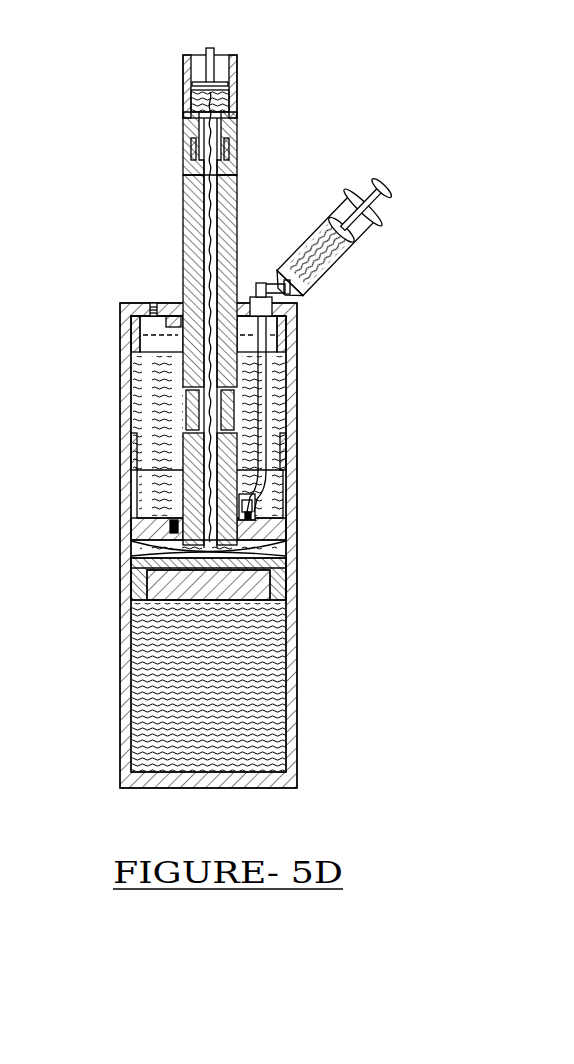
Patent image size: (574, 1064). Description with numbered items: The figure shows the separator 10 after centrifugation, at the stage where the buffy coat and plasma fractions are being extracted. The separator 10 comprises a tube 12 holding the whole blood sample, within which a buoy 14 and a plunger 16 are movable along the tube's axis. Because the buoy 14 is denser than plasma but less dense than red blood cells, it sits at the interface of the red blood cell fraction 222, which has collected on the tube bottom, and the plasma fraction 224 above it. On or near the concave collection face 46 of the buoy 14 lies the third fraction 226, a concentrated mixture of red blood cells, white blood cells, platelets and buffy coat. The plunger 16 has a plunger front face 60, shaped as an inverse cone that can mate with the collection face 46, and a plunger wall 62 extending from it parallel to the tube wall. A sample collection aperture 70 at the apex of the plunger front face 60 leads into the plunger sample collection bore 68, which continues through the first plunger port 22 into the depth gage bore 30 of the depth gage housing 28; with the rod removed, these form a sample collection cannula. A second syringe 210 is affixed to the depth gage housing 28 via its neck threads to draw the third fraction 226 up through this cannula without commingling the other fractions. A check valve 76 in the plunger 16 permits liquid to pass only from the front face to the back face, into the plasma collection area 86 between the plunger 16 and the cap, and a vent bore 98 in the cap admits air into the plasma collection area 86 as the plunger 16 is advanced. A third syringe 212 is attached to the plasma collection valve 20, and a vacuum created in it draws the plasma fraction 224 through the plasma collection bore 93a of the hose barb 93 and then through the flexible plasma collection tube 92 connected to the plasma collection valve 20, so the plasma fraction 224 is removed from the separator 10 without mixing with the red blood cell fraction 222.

The separator 10 is at (131, 187).
The tube 12 is at (306, 707).
The buoy 14 is at (279, 591).
The plunger 16 is at (272, 536).
The plasma collection valve 20 is at (258, 283).
The first plunger port 22 is at (182, 412).
The depth gage housing 28 is at (237, 207).
The depth gage bore 30 is at (204, 252).
The collection face 46 is at (186, 541).
The plunger front face 60 is at (273, 563).
The plunger wall 62 is at (272, 493).
The plunger sample collection bore 68 is at (182, 460).
The sample collection aperture 70 is at (279, 607).
The check valve 76 is at (182, 521).
The plasma collection area 86 is at (290, 499).
The plasma collection tube 92 is at (262, 392).
The hose barb 93 is at (288, 507).
The plasma collection bore 93a is at (262, 532).
The vent bore 98 is at (144, 303).
The second syringe 210 is at (234, 75).
The third syringe 212 is at (365, 234).
The red blood cell fraction 222 is at (257, 741).
The plasma fraction 224 is at (268, 438).
The third fraction 226 is at (214, 98).